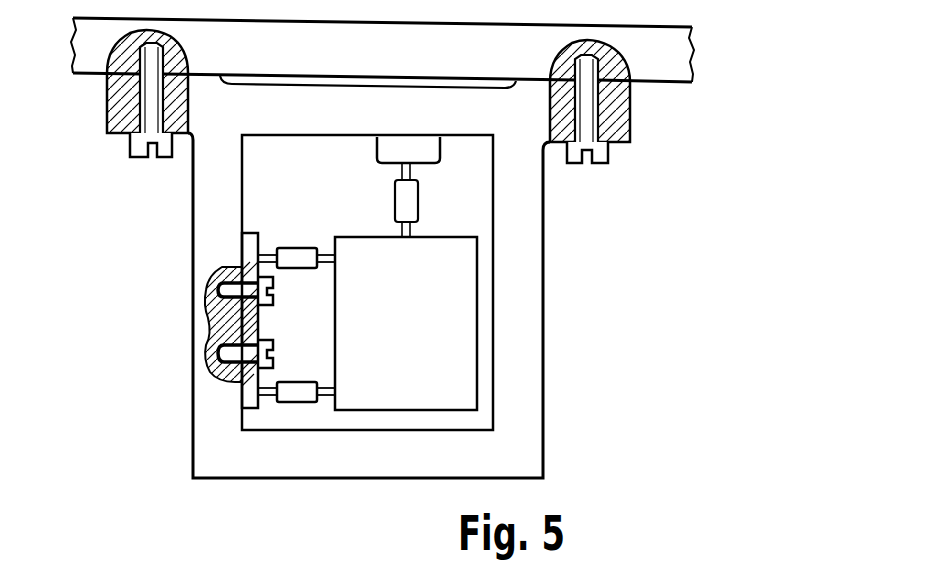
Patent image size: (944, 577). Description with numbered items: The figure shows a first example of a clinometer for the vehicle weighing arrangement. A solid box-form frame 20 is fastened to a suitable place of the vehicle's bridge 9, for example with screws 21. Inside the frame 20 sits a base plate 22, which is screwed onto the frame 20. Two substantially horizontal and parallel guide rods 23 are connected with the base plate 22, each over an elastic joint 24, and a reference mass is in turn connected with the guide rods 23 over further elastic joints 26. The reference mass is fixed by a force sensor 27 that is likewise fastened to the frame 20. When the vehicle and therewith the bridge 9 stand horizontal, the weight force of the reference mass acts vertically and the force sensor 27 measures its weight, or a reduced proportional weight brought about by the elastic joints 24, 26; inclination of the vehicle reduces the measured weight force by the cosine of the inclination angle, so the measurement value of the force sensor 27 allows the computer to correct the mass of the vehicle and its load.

The bridge 9 is at (667, 67).
The frame 20 is at (527, 255).
The screws 21 is at (152, 117).
The base plate 22 is at (250, 245).
The guide rods 23 is at (265, 259).
The elastic joint 24 is at (297, 260).
The elastic joints 26 is at (335, 258).
The force sensor 27 is at (423, 152).